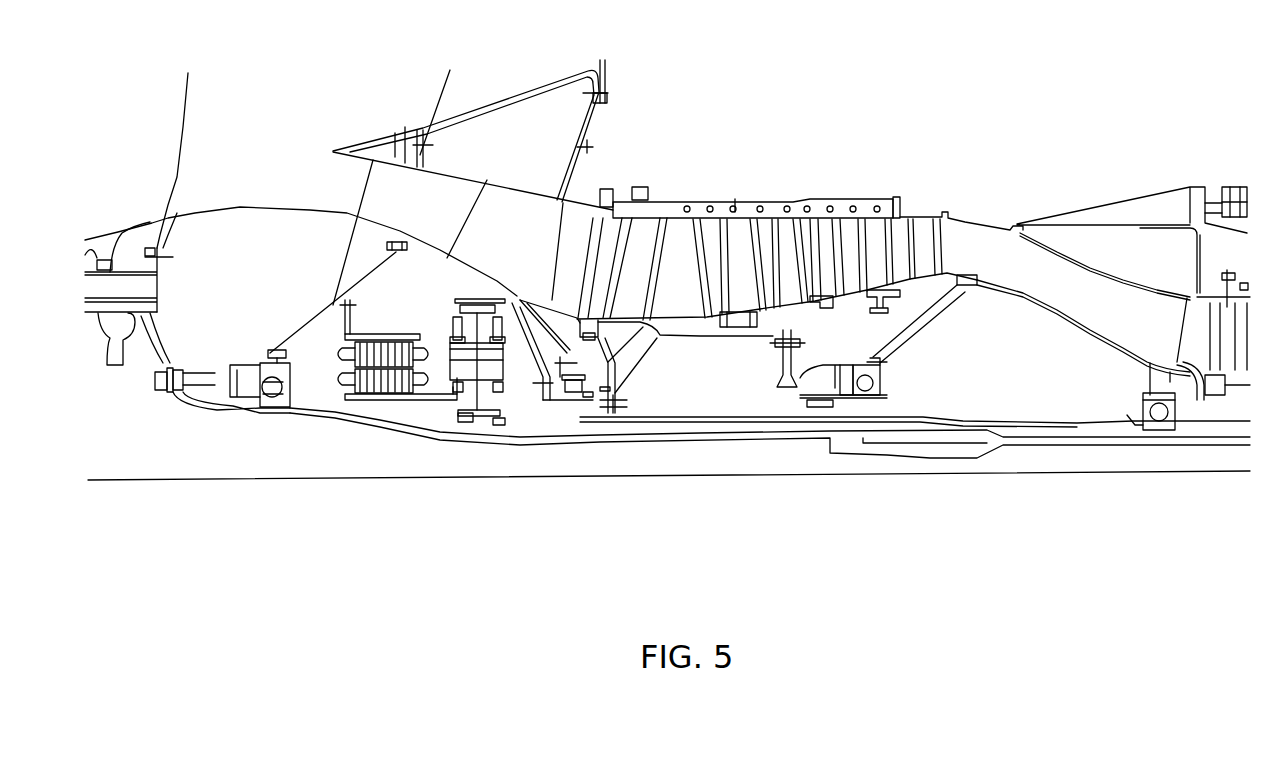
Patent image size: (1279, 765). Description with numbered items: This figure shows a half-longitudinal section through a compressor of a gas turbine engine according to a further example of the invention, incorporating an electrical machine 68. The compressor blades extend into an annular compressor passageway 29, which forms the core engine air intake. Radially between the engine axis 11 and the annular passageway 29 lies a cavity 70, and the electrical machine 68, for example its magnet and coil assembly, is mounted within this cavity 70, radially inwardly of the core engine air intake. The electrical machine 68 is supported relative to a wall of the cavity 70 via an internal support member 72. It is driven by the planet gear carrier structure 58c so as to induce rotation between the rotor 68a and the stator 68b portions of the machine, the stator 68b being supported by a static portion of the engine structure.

The engine axis 11 is at (607, 481).
The annular compressor passageway 29 is at (333, 184).
The cavity 70 is at (403, 303).
The internal support member 72 is at (300, 317).
The electrical machine 68 is at (312, 381).
The rotor 68a is at (367, 394).
The stator 68b is at (382, 334).
The planet gear carrier structure 58c is at (427, 400).